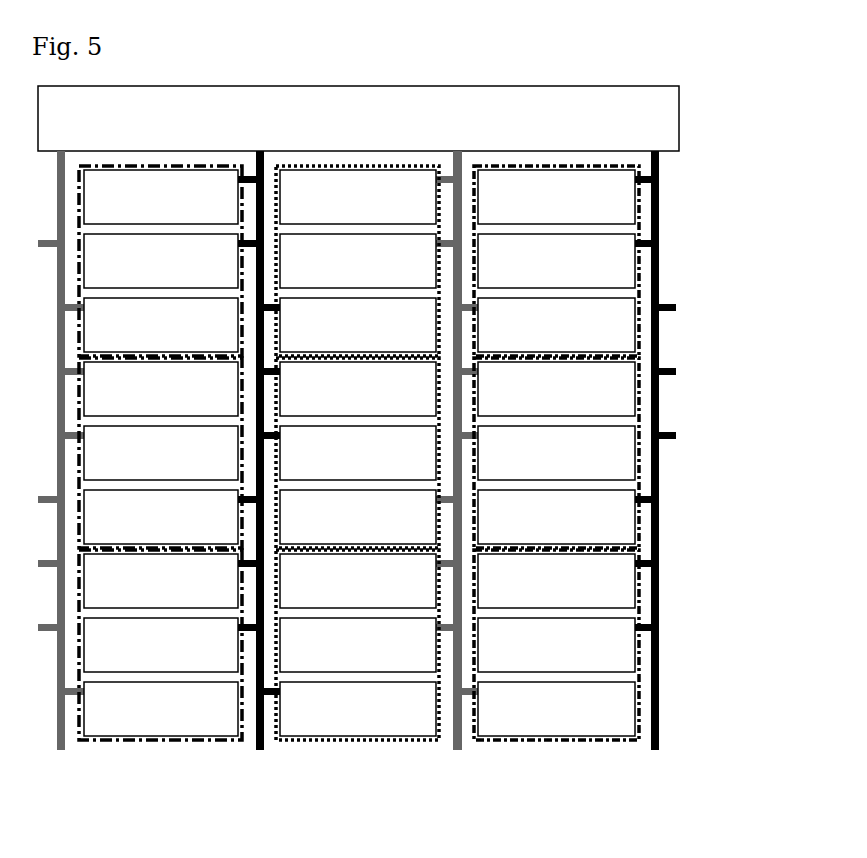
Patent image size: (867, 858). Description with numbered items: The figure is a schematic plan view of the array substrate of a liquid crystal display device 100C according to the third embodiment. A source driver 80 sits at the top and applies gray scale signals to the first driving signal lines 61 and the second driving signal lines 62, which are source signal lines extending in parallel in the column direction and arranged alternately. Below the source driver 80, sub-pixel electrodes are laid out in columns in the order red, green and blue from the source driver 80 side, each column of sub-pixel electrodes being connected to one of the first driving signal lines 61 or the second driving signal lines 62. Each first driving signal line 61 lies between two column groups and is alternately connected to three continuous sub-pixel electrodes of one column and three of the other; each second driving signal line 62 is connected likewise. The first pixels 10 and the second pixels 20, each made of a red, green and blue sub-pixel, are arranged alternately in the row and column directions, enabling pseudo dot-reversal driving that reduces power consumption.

The first pixel 10 is at (437, 436).
The second pixel 20 is at (640, 464).
The first driving signal line 61 is at (259, 751).
The second driving signal line 62 is at (61, 751).
The source driver 80 is at (358, 118).
The liquid crystal display device 100C is at (791, 126).